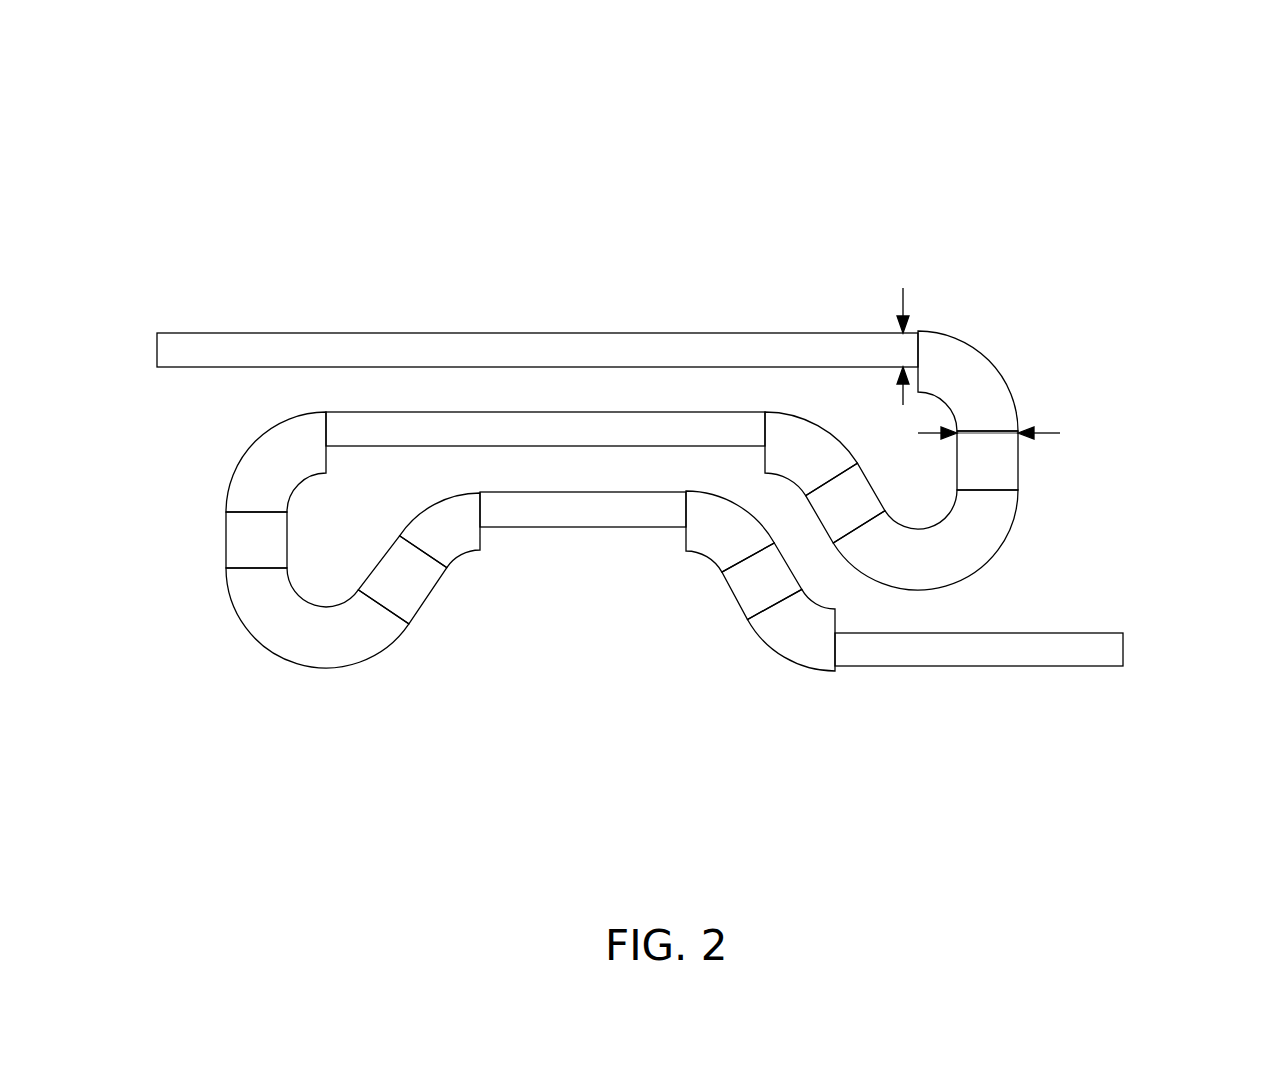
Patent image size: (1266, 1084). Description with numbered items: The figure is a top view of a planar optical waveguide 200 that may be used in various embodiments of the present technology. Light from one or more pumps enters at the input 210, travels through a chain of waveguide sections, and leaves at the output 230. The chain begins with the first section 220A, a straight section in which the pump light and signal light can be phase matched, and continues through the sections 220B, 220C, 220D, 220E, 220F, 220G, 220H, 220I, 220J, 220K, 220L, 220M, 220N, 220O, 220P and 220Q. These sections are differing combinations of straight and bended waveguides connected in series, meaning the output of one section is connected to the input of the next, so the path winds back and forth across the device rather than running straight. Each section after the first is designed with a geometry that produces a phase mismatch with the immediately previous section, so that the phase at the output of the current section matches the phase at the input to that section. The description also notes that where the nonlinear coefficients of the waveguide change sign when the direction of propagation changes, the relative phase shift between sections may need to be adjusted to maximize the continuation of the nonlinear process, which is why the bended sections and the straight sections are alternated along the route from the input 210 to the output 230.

The waveguide 200 is at (1180, 105).
The input 210 is at (113, 326).
The output 230 is at (1190, 666).
The first section 220A is at (595, 328).
The section 220B is at (985, 353).
The section 220C is at (1020, 465).
The section 220D is at (999, 548).
The section 220E is at (870, 490).
The section 220F is at (800, 413).
The section 220G is at (380, 413).
The section 220H is at (240, 456).
The section 220I is at (225, 535).
The section 220J is at (240, 619).
The section 220K is at (424, 604).
The section 220L is at (483, 545).
The section 220M is at (582, 492).
The section 220N is at (692, 553).
The section 220O is at (736, 602).
The section 220P is at (774, 653).
The section 220Q is at (950, 667).